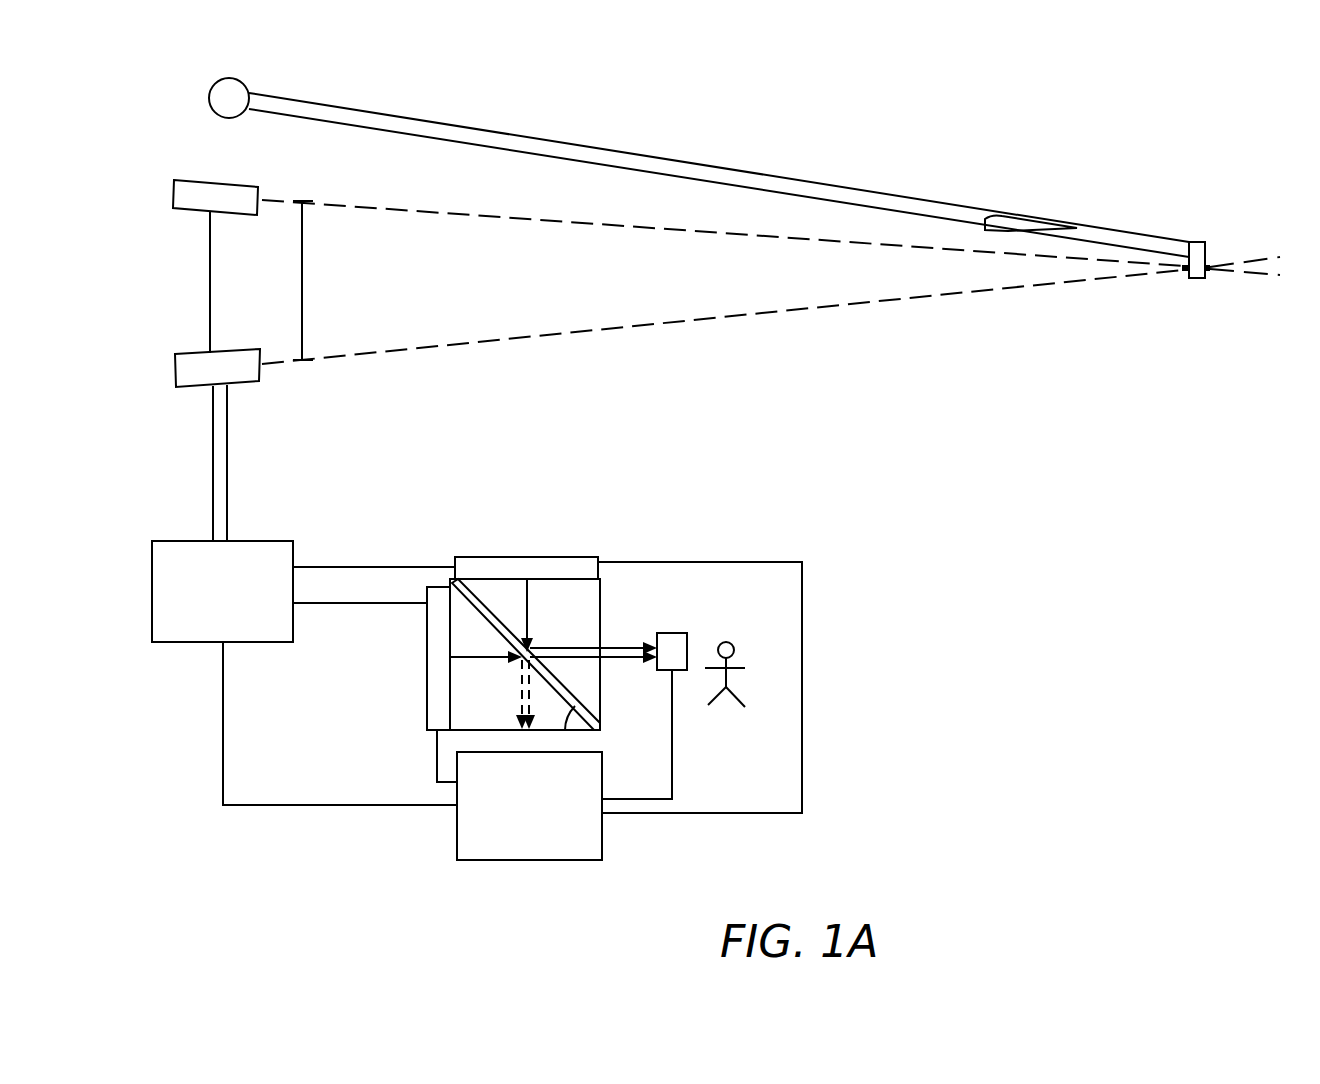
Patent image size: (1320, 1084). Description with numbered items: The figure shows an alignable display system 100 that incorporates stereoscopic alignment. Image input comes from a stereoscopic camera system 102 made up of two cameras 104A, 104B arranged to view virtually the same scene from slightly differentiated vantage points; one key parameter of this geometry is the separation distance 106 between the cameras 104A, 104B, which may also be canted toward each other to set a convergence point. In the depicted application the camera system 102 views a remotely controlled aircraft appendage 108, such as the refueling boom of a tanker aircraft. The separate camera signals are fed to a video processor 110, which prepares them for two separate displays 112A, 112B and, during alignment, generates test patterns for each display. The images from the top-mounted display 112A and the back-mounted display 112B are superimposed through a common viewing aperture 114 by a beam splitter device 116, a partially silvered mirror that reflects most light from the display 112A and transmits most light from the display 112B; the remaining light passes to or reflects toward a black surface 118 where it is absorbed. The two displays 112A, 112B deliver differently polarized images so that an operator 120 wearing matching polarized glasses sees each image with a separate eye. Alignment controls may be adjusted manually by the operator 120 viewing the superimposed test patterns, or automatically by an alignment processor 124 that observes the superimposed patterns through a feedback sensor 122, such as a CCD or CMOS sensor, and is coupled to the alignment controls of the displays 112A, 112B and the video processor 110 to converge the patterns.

The alignable display system 100 is at (652, 498).
The stereoscopic camera system 102 is at (1197, 140).
The camera 104A is at (217, 181).
The camera 104B is at (207, 355).
The separation distance 106 is at (303, 280).
The remotely controlled aircraft appendage 108 is at (1160, 237).
The video processor 110 is at (200, 540).
The top-mounted display 112A is at (535, 557).
The back-mounted (side) display 112B is at (426, 667).
The common viewing aperture 114 is at (612, 634).
The beam splitter device 116 is at (500, 625).
The black surface 118 is at (585, 708).
The operator 120 is at (742, 666).
The feedback sensor 122 is at (690, 646).
The alignment processor 124 is at (530, 860).